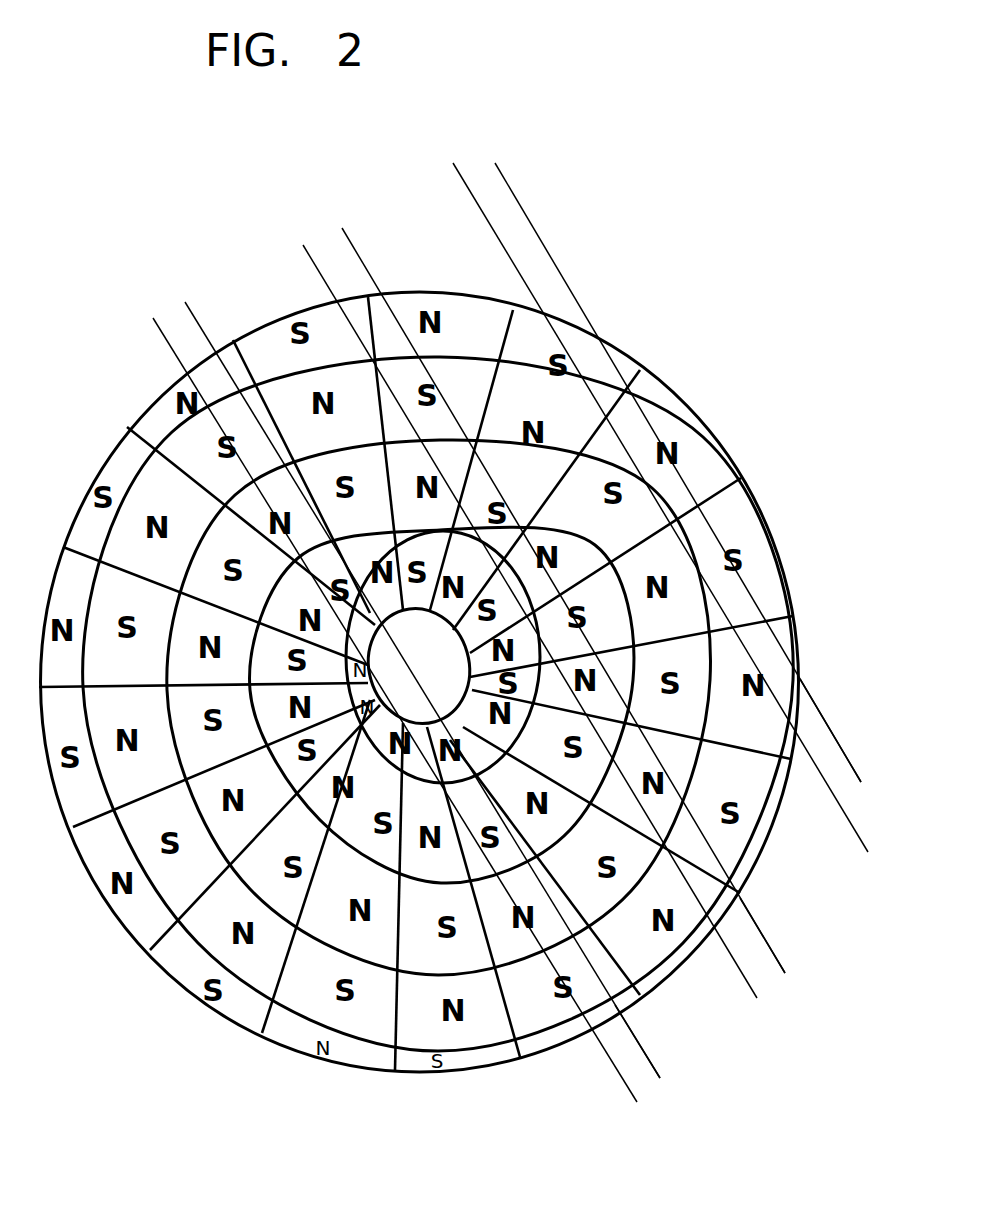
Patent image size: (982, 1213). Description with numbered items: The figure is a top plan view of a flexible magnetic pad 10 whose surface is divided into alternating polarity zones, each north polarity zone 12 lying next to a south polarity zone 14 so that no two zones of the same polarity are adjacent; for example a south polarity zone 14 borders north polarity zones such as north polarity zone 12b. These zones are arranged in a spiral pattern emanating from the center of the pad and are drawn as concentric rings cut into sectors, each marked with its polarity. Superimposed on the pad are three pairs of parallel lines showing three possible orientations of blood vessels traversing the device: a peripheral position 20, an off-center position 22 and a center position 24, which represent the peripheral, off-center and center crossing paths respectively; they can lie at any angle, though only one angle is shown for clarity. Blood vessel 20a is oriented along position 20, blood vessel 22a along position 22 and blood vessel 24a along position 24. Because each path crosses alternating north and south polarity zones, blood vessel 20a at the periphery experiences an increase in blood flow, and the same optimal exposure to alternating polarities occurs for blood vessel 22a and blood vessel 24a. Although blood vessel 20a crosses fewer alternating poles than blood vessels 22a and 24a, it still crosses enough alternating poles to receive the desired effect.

The flexible magnetic pad 10 is at (570, 1047).
The north polarity zone 12 is at (687, 430).
The north polarity zone 12b is at (407, 310).
The south polarity zone 14 is at (533, 332).
The peripheral crossing path position 20 is at (553, 257).
The blood vessel 20a is at (832, 726).
The off-center crossing path position 22 is at (363, 258).
The blood vessel 22a is at (766, 942).
The center crossing path position 24 is at (177, 357).
The blood vessel 24a is at (660, 1073).